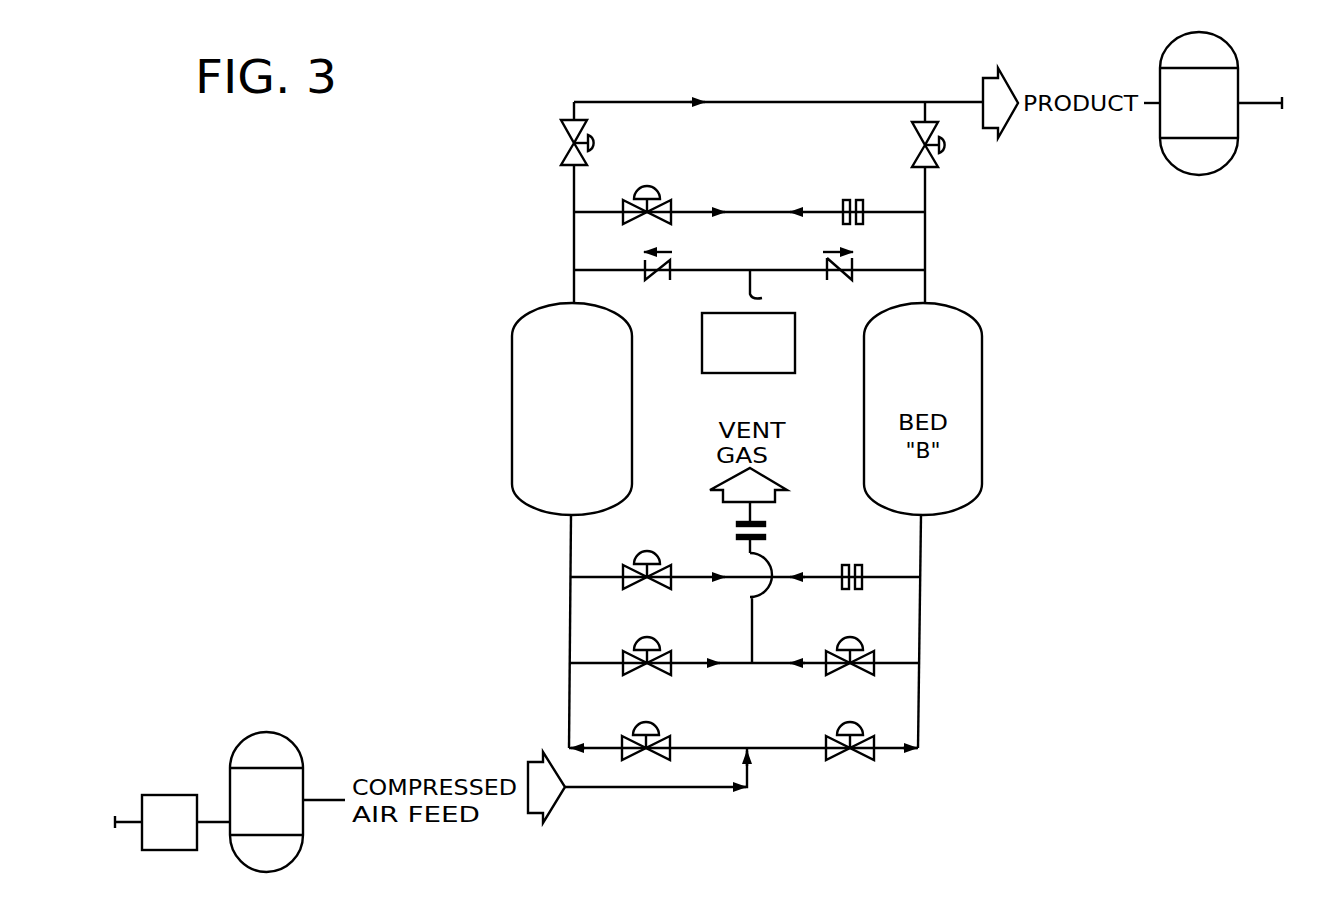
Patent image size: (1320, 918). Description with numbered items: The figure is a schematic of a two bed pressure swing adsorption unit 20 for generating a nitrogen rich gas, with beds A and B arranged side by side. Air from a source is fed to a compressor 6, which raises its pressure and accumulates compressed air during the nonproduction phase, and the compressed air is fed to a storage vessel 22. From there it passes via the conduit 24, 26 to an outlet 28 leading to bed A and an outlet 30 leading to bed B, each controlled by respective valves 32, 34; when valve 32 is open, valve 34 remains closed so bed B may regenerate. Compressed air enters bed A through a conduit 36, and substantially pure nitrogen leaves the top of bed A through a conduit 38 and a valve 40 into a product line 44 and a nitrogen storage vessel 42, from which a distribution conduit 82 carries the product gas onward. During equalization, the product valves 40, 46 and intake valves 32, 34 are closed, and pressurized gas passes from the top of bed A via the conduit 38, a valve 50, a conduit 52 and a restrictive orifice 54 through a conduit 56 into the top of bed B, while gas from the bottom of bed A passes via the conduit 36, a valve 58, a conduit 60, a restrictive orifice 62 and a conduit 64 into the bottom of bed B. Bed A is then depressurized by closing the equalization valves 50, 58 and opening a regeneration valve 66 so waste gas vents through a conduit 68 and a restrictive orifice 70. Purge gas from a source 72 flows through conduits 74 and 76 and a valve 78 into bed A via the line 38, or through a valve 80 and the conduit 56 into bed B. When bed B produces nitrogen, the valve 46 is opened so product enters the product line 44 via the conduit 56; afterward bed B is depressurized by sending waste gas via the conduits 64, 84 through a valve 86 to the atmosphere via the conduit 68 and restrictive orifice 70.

The compressor 6 is at (162, 836).
The pressure swing adsorption unit 20 is at (488, 382).
The storage vessel 22 is at (251, 814).
The conduit 24 is at (324, 803).
The conduit 26 is at (749, 772).
The outlet 28 is at (718, 750).
The outlet 30 is at (784, 748).
The valve 32 is at (664, 722).
The valve 34 is at (859, 718).
The conduit 36 is at (570, 543).
The conduit 38 is at (574, 290).
The valve 40 is at (556, 143).
The nitrogen storage vessel 42 is at (1183, 117).
The product line 44 is at (803, 102).
The valve 46 is at (910, 145).
The valve 50 is at (669, 184).
The conduit 52 is at (750, 212).
The restrictive orifice 54 is at (845, 200).
The conduit 56 is at (925, 291).
The valve 58 is at (655, 547).
The conduit 60 is at (795, 571).
The restrictive orifice 62 is at (857, 560).
The conduit 64 is at (922, 544).
The regeneration valve 66 is at (660, 635).
The conduit 68 is at (754, 614).
The restrictive orifice 70 is at (767, 532).
The source 72 is at (799, 335).
The conduit 74 is at (733, 292).
The conduit 76 is at (769, 265).
The valve 78 is at (681, 259).
The valve 80 is at (863, 259).
The distribution conduit 82 is at (1258, 103).
The conduit 84 is at (899, 661).
The valve 86 is at (857, 634).